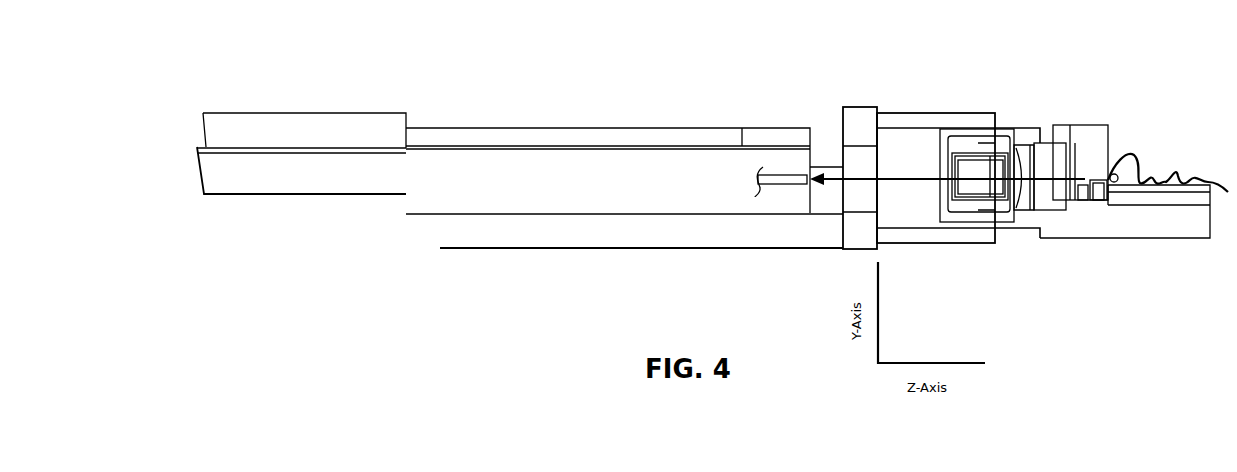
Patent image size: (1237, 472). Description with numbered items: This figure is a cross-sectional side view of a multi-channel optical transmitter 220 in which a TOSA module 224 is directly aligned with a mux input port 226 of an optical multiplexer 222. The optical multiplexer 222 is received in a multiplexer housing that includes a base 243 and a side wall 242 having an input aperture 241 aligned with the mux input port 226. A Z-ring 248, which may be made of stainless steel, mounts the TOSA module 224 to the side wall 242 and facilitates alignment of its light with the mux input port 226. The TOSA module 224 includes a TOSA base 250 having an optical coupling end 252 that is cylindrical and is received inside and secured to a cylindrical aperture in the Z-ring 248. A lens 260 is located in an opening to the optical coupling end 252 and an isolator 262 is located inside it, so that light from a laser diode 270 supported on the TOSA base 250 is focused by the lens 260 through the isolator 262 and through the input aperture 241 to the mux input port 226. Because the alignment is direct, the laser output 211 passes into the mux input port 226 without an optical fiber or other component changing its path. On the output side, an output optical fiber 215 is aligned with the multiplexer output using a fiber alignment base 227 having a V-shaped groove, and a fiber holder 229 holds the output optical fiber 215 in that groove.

The multi-channel optical transmitter 220 is at (470, 38).
The fiber holder 229 is at (250, 113).
The output optical fiber 215 is at (315, 150).
The fiber alignment base 227 is at (240, 184).
The optical multiplexer 222 is at (558, 128).
The base 243 is at (615, 230).
The input aperture 241 is at (853, 197).
The side wall 242 is at (845, 108).
The mux input port 226 is at (793, 176).
The laser output 211 is at (912, 180).
The Z-ring 248 is at (903, 114).
The isolator 262 is at (960, 158).
The optical coupling end 252 is at (1015, 128).
The lens 260 is at (1042, 158).
The TOSA base 250 is at (1083, 98).
The laser diode 270 is at (1097, 178).
The TOSA module 224 is at (1155, 125).